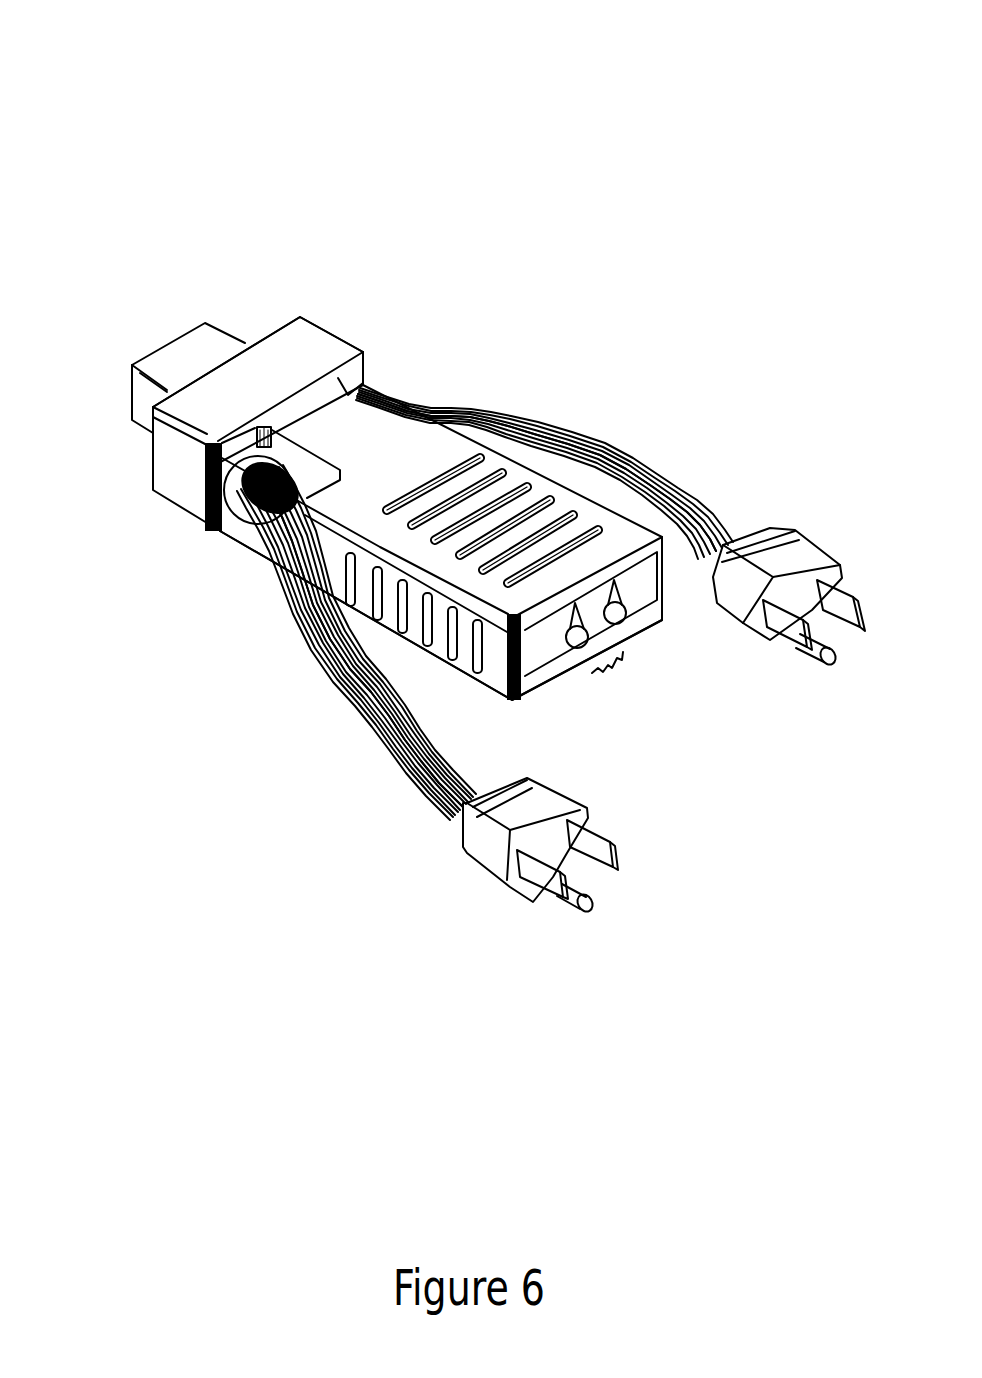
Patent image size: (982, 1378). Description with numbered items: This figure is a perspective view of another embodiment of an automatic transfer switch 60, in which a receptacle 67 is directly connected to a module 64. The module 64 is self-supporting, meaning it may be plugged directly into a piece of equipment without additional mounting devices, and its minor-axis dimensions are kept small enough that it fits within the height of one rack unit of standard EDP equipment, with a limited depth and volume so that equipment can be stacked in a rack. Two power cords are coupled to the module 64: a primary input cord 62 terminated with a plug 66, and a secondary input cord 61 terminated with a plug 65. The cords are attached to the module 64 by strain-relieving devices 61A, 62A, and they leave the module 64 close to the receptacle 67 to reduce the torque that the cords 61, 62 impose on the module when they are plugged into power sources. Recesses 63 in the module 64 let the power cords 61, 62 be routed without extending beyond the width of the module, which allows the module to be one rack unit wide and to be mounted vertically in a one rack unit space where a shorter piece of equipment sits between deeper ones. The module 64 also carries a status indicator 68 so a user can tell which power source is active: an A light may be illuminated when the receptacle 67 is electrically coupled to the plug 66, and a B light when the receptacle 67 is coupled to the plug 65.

The automatic transfer switch 60 is at (218, 211).
The secondary input cord 61 is at (634, 460).
The strain-relieving device 61A is at (373, 383).
The primary input cord 62 is at (380, 770).
The strain-relieving device 62A is at (178, 522).
The recesses 63 is at (435, 390).
The module 64 is at (295, 347).
The plug 65 is at (773, 648).
The plug 66 is at (498, 870).
The receptacle 67 is at (170, 352).
The status indicator 68 is at (625, 683).